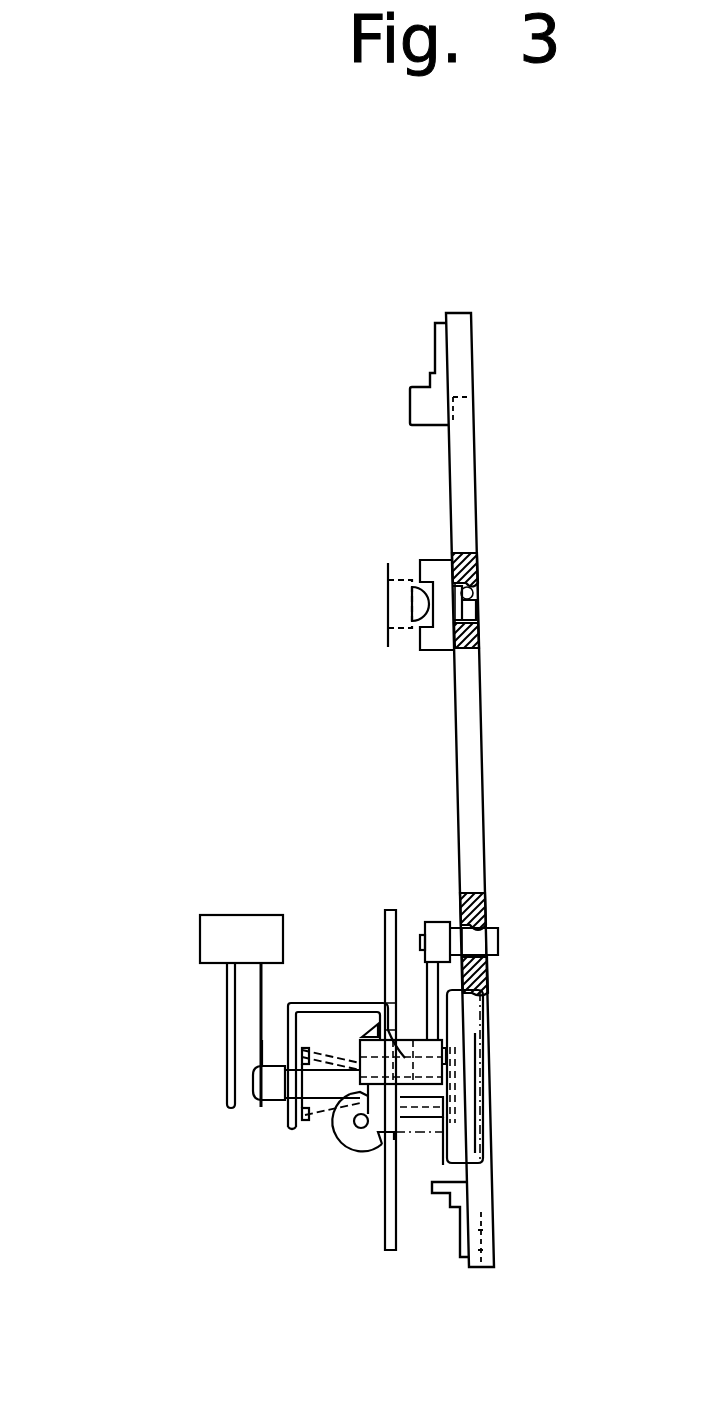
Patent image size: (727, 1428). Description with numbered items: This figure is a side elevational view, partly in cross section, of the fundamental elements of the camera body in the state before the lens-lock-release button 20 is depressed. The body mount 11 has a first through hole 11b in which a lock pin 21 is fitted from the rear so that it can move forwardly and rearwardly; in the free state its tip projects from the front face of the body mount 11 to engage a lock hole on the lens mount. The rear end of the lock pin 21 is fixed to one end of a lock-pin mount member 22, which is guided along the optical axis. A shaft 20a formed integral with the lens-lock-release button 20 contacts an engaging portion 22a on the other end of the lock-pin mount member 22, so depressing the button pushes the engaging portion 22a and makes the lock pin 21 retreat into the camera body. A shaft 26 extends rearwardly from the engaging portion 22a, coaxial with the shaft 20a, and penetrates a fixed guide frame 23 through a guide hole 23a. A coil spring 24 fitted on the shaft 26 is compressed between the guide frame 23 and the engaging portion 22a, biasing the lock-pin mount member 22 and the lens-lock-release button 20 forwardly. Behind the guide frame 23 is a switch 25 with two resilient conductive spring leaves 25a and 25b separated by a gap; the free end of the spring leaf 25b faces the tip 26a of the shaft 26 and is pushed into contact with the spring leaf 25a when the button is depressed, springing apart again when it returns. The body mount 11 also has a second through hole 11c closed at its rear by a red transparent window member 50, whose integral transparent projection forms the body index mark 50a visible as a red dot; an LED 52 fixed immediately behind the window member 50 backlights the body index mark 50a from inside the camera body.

The body mount 11 is at (460, 347).
The first through hole 11b is at (497, 932).
The second through hole 11c is at (478, 595).
The lens-lock-release button 20 is at (479, 1100).
The shaft 20a is at (426, 1132).
The lock pin 21 is at (500, 941).
The lock-pin mount member 22 is at (430, 1000).
The engaging portion 22a is at (347, 1037).
The fixed guide frame 23 is at (361, 998).
The guide hole 23a is at (255, 1085).
The coil spring 24 is at (320, 1110).
The switch 25 is at (203, 945).
The spring leaf 25a is at (227, 1015).
The spring leaf 25b is at (260, 1042).
The shaft 26 is at (279, 1093).
The tip 26a is at (268, 1062).
The window member 50 is at (428, 638).
The body index mark 50a is at (460, 610).
The LED 52 is at (402, 612).